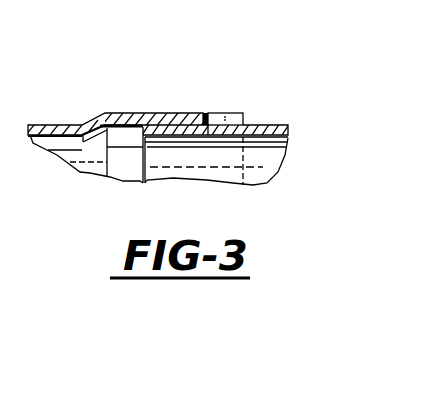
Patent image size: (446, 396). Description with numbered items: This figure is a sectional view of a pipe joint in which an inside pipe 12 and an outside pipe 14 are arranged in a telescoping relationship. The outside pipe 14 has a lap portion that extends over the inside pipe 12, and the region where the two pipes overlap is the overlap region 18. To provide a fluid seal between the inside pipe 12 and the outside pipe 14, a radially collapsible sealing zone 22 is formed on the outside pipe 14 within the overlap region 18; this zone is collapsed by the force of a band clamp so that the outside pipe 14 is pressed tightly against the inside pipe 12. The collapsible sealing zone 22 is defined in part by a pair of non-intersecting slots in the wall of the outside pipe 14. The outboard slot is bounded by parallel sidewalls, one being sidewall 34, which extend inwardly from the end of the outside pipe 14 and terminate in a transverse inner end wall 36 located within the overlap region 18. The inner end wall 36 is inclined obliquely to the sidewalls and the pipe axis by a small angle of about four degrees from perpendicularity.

The inside pipe 12 is at (273, 125).
The outside pipe 14 is at (110, 112).
The overlap region 18 is at (175, 152).
The radially collapsible sealing zone 22 is at (203, 100).
The sidewall 34 is at (238, 114).
The transverse inner end wall 36 is at (222, 125).